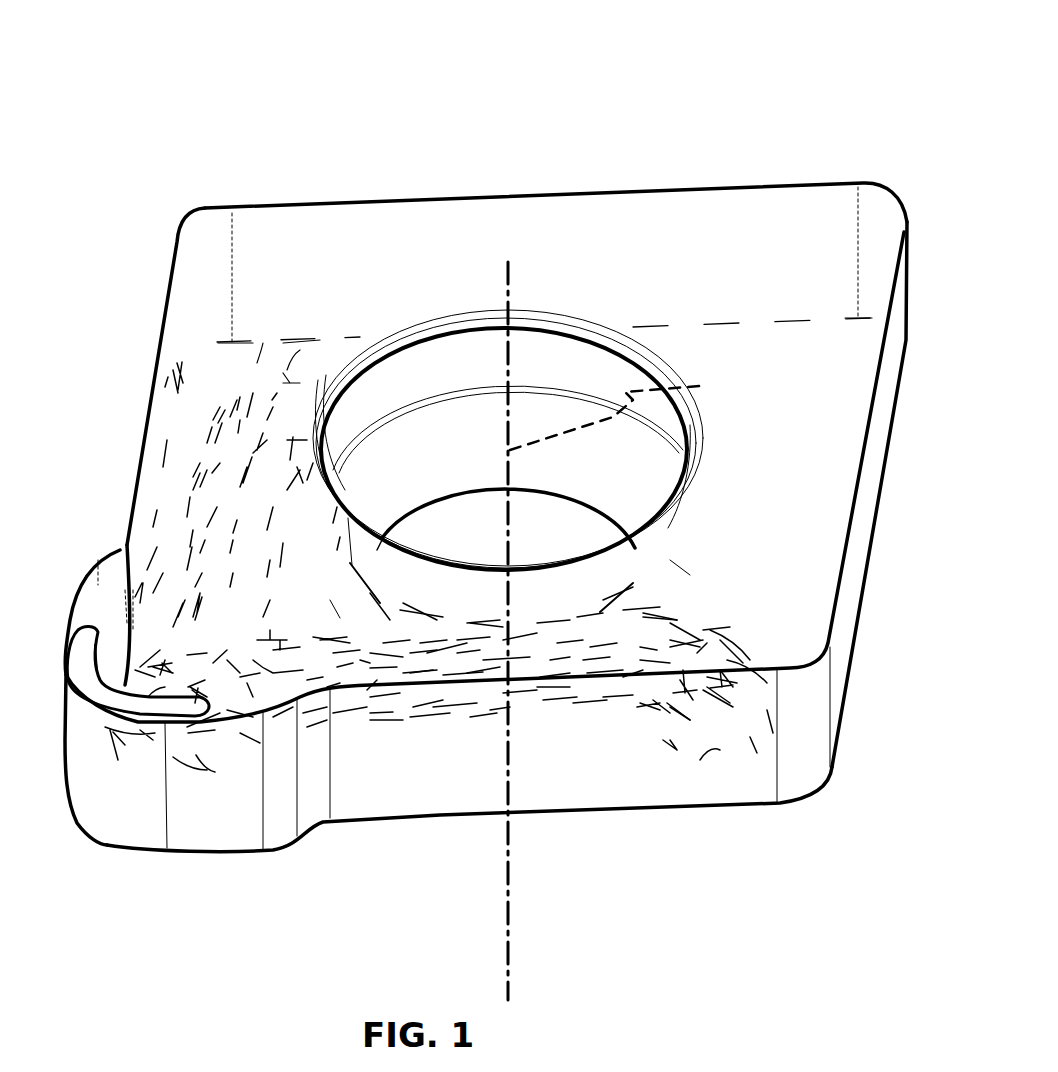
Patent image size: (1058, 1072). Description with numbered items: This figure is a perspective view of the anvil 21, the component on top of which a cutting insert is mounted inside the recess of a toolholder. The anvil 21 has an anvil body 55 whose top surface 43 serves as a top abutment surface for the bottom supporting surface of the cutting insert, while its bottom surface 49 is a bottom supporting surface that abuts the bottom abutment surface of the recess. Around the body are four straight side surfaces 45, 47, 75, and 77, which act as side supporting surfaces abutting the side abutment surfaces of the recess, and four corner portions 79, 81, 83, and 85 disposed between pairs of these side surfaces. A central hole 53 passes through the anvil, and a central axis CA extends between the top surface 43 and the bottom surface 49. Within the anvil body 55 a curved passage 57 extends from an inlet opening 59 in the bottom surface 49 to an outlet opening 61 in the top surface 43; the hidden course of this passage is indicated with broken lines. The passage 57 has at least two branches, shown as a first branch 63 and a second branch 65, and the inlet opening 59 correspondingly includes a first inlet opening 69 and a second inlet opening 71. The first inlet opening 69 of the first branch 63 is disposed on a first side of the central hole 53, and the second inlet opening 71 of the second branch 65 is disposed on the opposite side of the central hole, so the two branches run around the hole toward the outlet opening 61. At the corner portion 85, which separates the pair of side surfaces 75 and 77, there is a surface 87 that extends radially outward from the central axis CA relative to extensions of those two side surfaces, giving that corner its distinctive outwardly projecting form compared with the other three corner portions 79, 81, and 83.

The anvil 21 is at (387, 128).
The top surface 43 is at (760, 233).
The side surface 45 is at (665, 227).
The side surface 47 is at (867, 502).
The bottom surface 49 is at (390, 790).
The central hole 53 is at (508, 464).
The anvil body 55 is at (531, 236).
The curved passage 57 is at (465, 735).
The inlet opening 59 is at (298, 395).
The outlet opening 61 is at (120, 552).
The first branch 63 is at (225, 500).
The second branch 65 is at (550, 697).
The first inlet opening 69 is at (278, 408).
The second inlet opening 71 is at (717, 737).
The side surface 75 is at (175, 392).
The side surface 77 is at (605, 777).
The corner portion 79 is at (897, 192).
The corner portion 81 is at (207, 212).
The corner portion 83 is at (813, 722).
The corner portion 85 is at (123, 826).
The surface 87 is at (148, 822).
The central axis CA is at (621, 415).